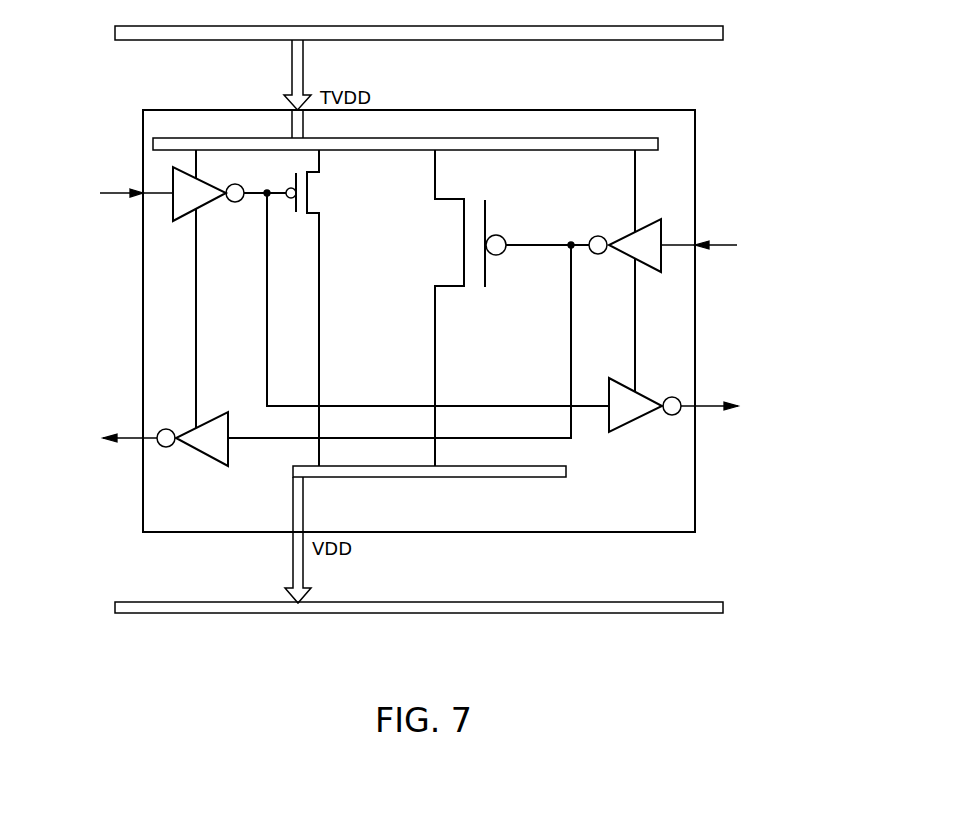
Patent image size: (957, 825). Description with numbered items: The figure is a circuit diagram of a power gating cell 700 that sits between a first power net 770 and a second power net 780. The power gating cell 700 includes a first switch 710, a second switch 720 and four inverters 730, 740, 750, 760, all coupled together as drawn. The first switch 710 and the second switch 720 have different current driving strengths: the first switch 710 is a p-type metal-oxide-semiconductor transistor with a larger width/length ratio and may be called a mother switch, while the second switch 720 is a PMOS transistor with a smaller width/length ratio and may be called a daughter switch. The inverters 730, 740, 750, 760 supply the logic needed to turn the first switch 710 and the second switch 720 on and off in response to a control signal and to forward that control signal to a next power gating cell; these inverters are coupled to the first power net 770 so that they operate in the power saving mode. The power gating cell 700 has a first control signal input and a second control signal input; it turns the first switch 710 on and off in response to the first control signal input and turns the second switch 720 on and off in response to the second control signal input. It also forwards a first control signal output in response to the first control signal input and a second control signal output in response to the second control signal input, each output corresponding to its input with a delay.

The power gating cell 700 is at (697, 138).
The first switch 710 is at (461, 236).
The second switch 720 is at (313, 190).
The inverter 730 is at (185, 223).
The inverter 740 is at (205, 458).
The inverter 750 is at (648, 273).
The inverter 760 is at (641, 413).
The first power net 770 is at (724, 33).
The second power net 780 is at (724, 607).